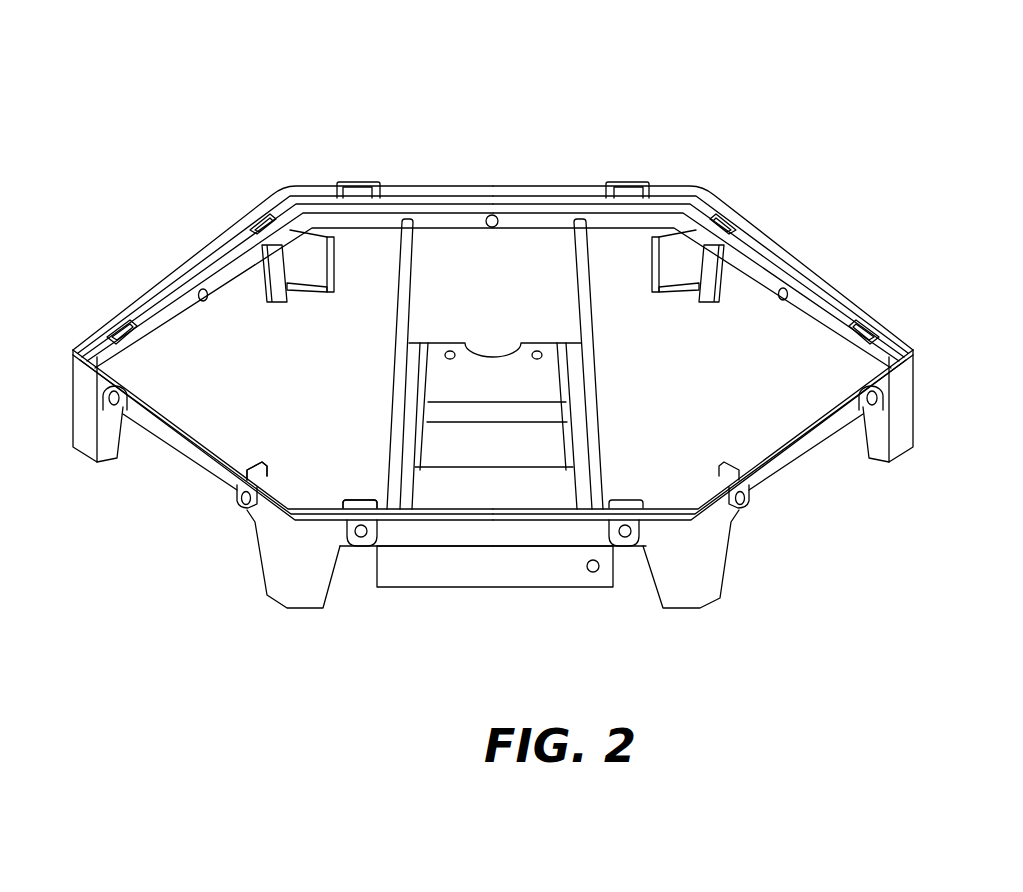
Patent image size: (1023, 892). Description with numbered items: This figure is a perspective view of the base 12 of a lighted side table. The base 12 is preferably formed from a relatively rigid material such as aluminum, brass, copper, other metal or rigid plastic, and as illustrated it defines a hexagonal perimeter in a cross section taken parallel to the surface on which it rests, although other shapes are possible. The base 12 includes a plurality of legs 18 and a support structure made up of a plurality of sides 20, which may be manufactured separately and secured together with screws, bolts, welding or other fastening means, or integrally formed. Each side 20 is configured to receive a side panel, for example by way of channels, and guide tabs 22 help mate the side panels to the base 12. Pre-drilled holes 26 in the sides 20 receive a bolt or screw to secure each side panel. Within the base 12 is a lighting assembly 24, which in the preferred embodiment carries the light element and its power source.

The base 12 is at (934, 221).
The legs 18 is at (907, 450).
The sides 20 is at (487, 530).
The guide tabs 22 is at (355, 500).
The lighting assembly 24 is at (333, 247).
The pre-drilled holes 26 is at (497, 221).